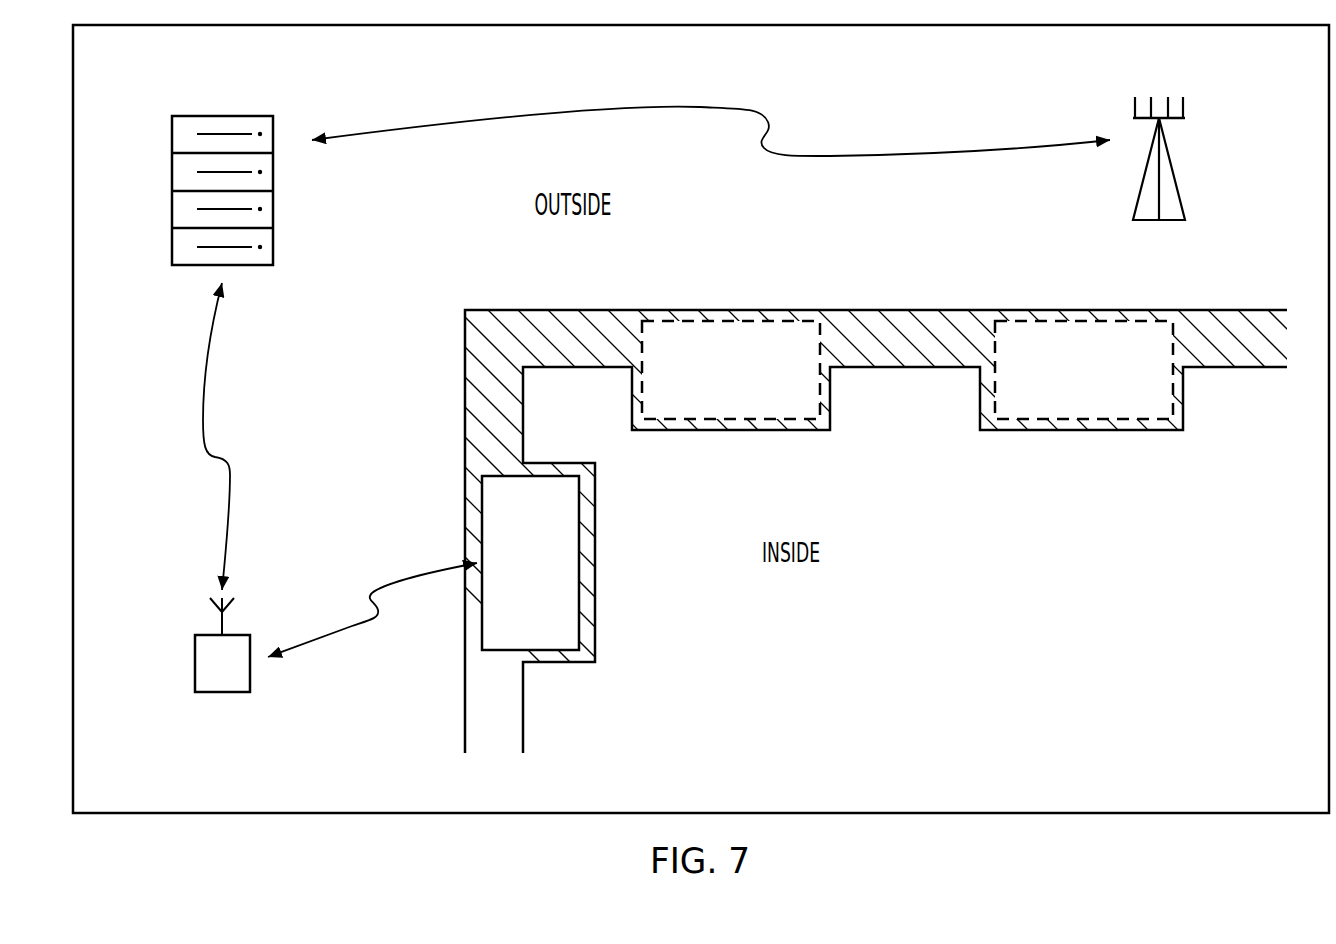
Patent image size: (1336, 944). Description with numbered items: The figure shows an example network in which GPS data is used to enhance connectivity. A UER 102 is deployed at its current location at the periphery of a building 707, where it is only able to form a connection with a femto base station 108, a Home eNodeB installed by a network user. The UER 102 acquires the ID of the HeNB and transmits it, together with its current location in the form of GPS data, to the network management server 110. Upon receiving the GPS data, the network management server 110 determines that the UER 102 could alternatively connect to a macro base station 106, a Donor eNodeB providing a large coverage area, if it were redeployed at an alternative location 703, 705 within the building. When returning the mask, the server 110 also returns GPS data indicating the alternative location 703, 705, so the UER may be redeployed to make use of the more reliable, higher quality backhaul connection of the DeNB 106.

The network management server 110 is at (274, 200).
The macro base station 106 is at (1177, 177).
The building 707 is at (572, 328).
The alternative location 703 is at (773, 330).
The alternative location 705 is at (1155, 333).
The UER 102 is at (580, 613).
The femto base station 108 is at (193, 663).